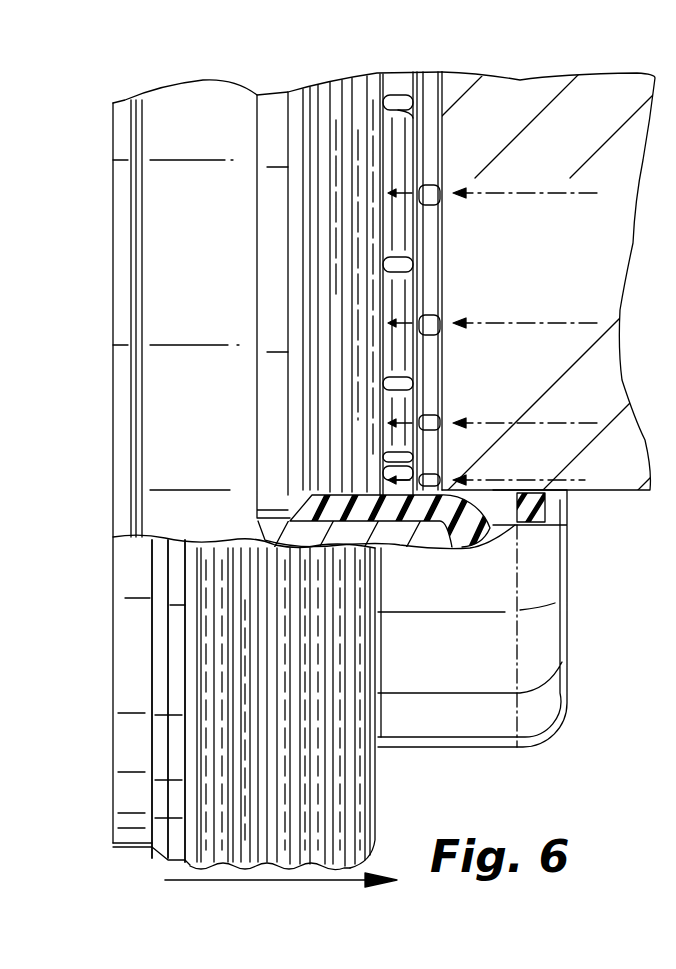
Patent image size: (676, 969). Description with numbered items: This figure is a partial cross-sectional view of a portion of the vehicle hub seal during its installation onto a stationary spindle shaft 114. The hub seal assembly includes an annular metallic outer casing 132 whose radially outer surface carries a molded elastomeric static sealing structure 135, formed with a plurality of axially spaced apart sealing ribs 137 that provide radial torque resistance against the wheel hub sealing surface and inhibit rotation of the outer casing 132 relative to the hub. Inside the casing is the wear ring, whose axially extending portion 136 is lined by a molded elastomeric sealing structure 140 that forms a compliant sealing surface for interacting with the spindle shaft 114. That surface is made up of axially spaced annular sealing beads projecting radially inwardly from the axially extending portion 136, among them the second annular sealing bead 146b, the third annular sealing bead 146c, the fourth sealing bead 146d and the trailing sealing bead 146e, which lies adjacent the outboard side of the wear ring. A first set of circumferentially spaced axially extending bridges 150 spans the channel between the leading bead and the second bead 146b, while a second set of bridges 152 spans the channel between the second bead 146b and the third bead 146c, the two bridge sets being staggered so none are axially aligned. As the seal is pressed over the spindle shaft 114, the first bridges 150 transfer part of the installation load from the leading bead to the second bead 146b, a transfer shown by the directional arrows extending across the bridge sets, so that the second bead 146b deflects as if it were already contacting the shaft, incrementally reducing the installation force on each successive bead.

The spindle shaft 114 is at (618, 478).
The outer casing 132 is at (135, 553).
The static sealing structure 135 is at (367, 765).
The axially extending portion 136 is at (408, 530).
The sealing ribs 137 is at (228, 582).
The sealing structure 140 is at (447, 520).
The second annular sealing bead 146b is at (418, 293).
The third annular sealing bead 146c is at (420, 228).
The fourth annular sealing bead 146d is at (330, 172).
The trailing sealing bead 146e is at (305, 130).
The first set of bridges 150 is at (440, 413).
The second set of bridges 152 is at (400, 102).